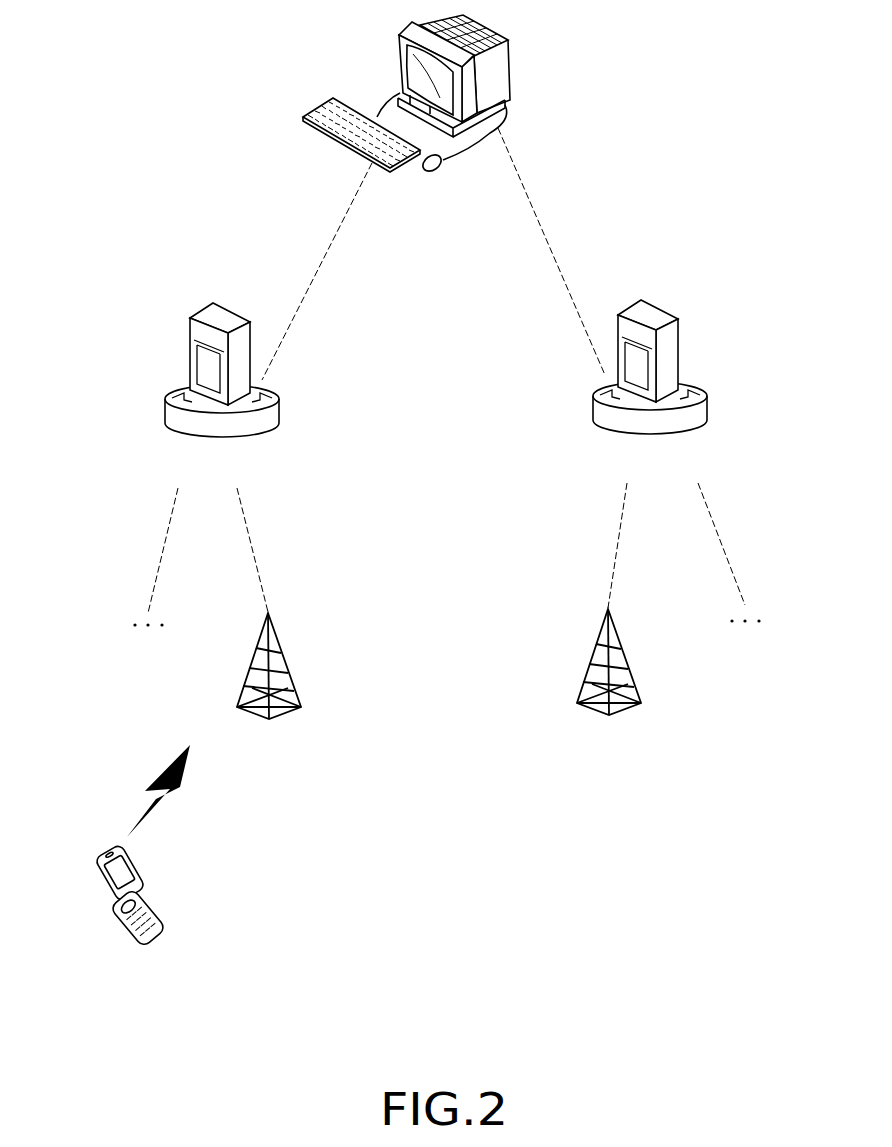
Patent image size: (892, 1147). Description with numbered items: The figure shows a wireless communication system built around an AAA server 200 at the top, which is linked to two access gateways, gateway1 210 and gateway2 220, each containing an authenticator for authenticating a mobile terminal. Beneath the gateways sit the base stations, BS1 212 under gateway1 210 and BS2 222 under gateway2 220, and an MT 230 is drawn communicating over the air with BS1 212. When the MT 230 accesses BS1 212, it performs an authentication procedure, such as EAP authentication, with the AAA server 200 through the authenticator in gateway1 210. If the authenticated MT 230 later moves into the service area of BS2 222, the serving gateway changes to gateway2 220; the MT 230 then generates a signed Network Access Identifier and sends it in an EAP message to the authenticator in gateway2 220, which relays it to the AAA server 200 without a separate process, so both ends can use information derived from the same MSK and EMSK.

The AAA server 200 is at (415, 127).
The gateway1 210 is at (223, 428).
The gateway2 220 is at (675, 422).
The BS1 212 is at (271, 687).
The BS2 222 is at (611, 685).
The MT 230 is at (142, 875).